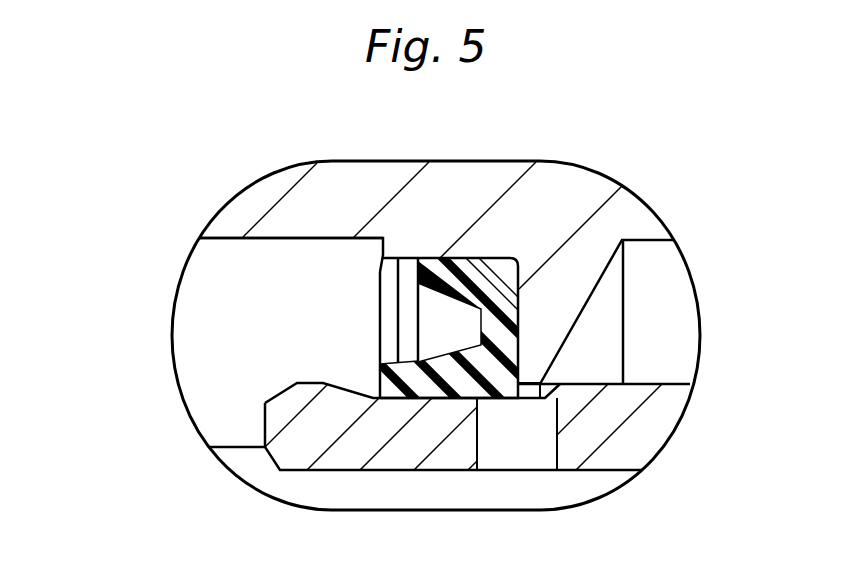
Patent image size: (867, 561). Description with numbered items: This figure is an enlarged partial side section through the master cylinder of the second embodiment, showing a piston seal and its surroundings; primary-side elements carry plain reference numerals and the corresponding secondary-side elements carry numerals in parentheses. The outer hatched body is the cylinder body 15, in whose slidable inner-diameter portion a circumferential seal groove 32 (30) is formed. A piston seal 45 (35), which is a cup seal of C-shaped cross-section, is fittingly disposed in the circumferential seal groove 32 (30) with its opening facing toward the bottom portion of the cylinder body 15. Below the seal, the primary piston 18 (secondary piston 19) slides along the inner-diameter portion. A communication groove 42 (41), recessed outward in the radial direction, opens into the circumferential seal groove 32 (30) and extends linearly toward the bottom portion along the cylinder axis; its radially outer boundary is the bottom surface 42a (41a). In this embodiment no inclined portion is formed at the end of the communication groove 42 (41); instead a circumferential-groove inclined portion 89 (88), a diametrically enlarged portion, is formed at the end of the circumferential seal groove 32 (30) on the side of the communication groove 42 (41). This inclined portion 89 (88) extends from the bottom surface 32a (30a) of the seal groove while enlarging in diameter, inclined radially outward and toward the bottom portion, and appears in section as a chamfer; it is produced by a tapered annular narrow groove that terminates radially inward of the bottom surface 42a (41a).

The cylinder body 15 is at (603, 170).
The communication groove 42 is at (236, 304).
The communication groove 41 is at (273, 244).
The bottom surface of the communication groove 42a is at (205, 279).
The bottom surface of the communication groove 41a is at (232, 240).
The circumferential-groove inclined portion 89 is at (235, 404).
The circumferential-groove inclined portion 88 is at (381, 270).
The circumferential seal groove 32 is at (536, 330).
The circumferential seal groove 30 is at (521, 269).
The piston seal 45 is at (392, 231).
The piston seal 35 is at (426, 256).
The bottom surface of the circumferential seal groove 32a is at (524, 208).
The bottom surface of the circumferential seal groove 30a is at (495, 262).
The primary piston 18 is at (513, 360).
The secondary piston 19 is at (660, 383).